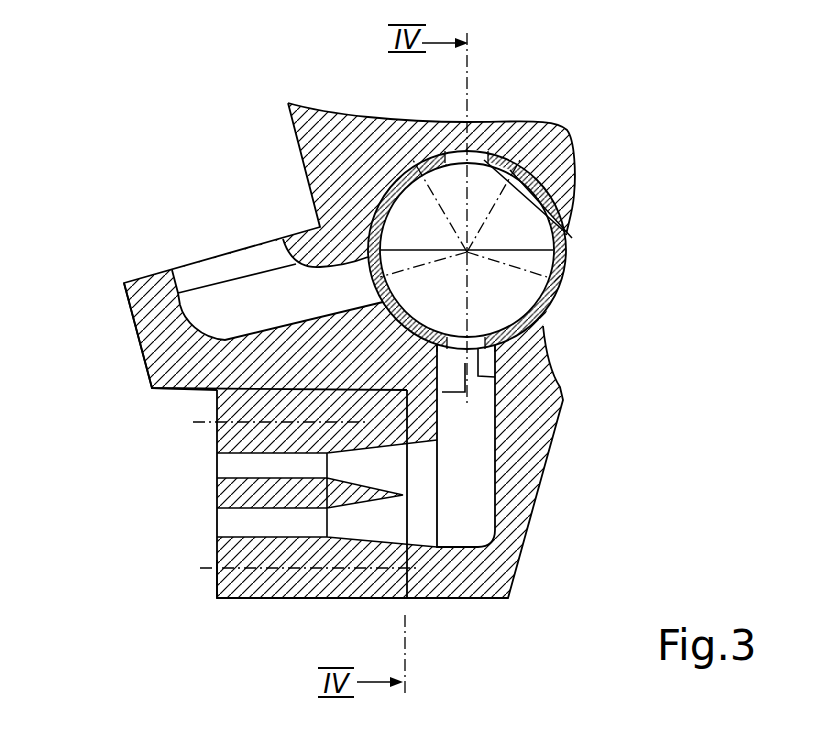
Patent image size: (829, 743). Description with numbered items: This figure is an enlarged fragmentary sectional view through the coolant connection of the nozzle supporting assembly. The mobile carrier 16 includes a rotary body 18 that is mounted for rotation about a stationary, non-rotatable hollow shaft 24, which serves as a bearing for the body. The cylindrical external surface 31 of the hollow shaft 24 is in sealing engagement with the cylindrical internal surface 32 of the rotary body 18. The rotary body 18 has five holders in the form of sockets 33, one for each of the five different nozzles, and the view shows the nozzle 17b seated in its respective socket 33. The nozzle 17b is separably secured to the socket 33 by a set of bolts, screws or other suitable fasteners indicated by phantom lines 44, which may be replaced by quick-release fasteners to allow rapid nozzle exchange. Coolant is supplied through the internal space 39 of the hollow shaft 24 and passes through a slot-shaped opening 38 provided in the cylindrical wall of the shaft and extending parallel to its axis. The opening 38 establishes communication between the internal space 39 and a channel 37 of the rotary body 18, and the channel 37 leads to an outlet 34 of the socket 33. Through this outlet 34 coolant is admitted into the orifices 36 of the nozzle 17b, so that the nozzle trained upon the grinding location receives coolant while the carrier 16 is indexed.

The mobile carrier 16 is at (608, 357).
The rotary body 18 is at (535, 447).
The hollow shaft 24 is at (567, 262).
The cylindrical external surface 31 is at (543, 288).
The cylindrical internal surface 32 is at (527, 237).
The socket 33 is at (249, 157).
The outlet 34 is at (192, 272).
The orifice 36 is at (233, 525).
The channel 37 is at (397, 130).
The opening 38 is at (480, 378).
The internal space 39 is at (513, 307).
The fasteners 44 is at (207, 424).
The nozzle 17b is at (223, 600).